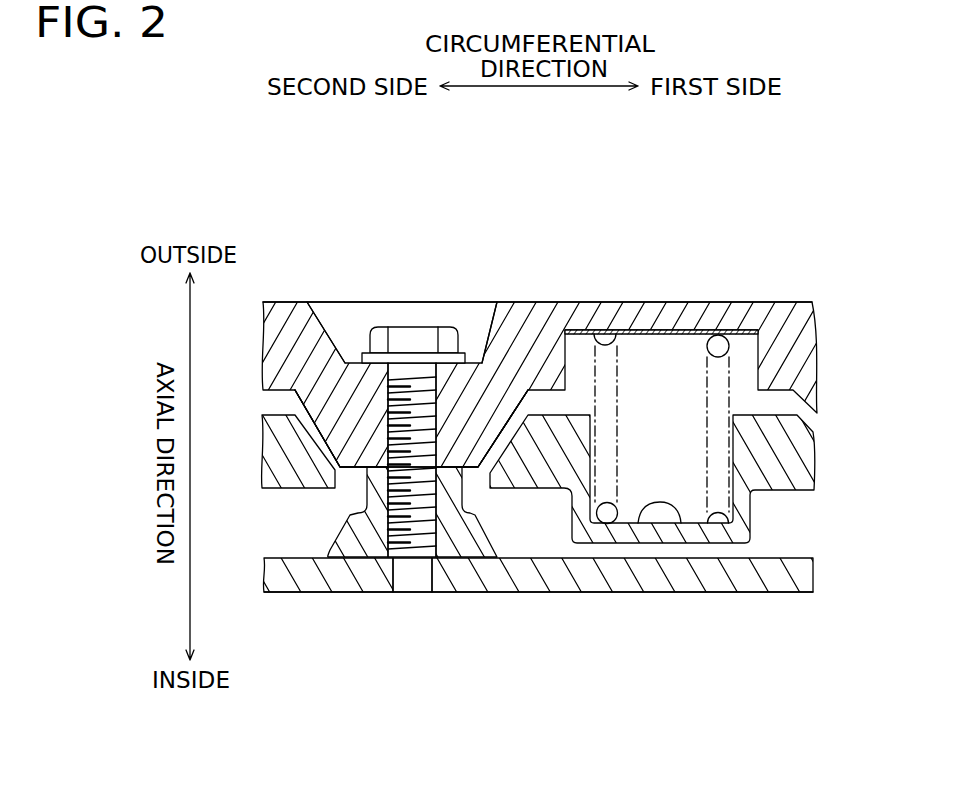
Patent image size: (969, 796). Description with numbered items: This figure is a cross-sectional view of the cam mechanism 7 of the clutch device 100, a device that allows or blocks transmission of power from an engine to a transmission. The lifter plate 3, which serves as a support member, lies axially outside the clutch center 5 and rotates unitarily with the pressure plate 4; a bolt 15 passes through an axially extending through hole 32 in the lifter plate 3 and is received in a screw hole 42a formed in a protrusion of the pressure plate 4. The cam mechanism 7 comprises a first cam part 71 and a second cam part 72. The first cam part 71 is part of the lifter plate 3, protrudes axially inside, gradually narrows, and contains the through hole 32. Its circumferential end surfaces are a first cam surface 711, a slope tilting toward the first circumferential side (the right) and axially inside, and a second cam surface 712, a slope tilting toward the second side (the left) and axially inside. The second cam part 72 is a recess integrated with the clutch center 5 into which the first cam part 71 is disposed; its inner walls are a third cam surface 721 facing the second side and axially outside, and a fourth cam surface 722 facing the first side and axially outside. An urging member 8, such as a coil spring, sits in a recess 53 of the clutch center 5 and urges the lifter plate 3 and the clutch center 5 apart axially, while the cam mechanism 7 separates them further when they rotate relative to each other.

The clutch device 100 is at (682, 206).
The lifter plate 3 is at (700, 302).
The pressure plate 4 is at (697, 593).
The clutch center 5 is at (782, 502).
The cam mechanism 7 is at (564, 284).
The urging member 8 is at (730, 373).
The bolt 15 is at (401, 326).
The through hole 32 is at (436, 428).
The screw hole 42a is at (418, 592).
The recess 53 is at (639, 525).
The first cam part 71 is at (479, 476).
The second cam part 72 is at (342, 507).
The first cam surface 711 is at (500, 442).
The second cam surface 712 is at (320, 408).
The third cam surface 721 is at (518, 432).
The fourth cam surface 722 is at (320, 408).